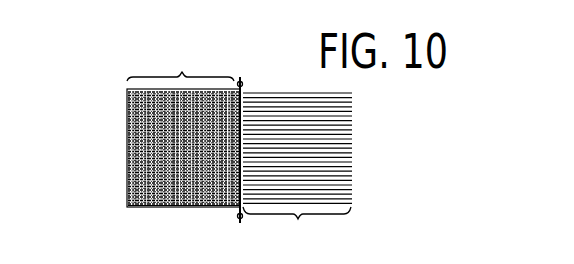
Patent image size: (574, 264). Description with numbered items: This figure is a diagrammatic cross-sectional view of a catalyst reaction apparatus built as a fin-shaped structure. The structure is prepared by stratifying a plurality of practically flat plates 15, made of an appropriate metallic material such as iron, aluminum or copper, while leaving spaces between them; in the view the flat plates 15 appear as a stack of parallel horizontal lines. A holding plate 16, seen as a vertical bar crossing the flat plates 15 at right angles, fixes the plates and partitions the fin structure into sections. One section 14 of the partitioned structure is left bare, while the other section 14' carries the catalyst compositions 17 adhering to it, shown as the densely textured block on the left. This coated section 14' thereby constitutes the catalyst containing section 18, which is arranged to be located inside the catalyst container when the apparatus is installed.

The section of fin structure 14 is at (297, 231).
The catalyst-carrying section of fin structure 14' is at (180, 58).
The flat plates 15 is at (352, 123).
The holding plate 16 is at (243, 81).
The catalyst compositions 17 is at (128, 122).
The catalyst containing section 18 is at (197, 207).